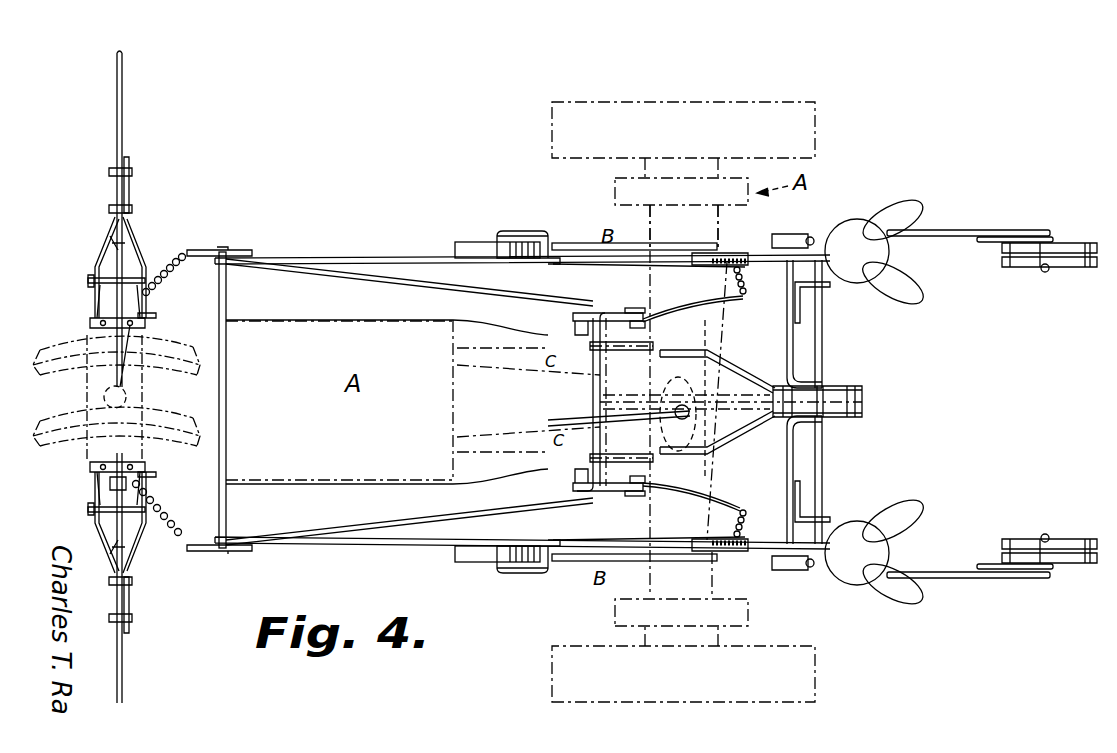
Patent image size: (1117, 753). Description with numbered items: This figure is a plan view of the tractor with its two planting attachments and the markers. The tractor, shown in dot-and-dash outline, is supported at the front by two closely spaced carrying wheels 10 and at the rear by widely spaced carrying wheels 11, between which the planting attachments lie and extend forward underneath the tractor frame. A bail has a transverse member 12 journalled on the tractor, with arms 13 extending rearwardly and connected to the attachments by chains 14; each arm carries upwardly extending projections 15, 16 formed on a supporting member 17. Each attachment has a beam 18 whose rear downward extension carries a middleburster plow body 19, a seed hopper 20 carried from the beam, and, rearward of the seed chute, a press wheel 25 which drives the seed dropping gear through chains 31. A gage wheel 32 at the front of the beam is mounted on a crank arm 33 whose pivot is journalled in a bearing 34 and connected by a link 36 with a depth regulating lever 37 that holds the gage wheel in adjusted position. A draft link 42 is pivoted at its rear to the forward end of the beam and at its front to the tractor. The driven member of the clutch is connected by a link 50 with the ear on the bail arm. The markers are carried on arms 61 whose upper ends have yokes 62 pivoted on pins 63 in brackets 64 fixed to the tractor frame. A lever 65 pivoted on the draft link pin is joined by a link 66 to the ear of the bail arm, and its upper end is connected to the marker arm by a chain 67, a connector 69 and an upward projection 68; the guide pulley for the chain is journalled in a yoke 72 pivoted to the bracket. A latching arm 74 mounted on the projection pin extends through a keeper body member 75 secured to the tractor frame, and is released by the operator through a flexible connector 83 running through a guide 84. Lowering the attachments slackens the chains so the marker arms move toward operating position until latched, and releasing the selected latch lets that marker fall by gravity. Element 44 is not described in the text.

The carrying wheels 10 is at (53, 415).
The carrying wheels 11 is at (816, 152).
The bail member 12 is at (592, 383).
The bail arms 13 is at (712, 306).
The chains 14 is at (746, 288).
The upwardly extending projection 15 is at (632, 308).
The upwardly extending projection 16 is at (630, 326).
The supporting member 17 is at (625, 350).
The beam 18 is at (658, 249).
The middleburster plow body 19 is at (908, 210).
The seed hopper 20 is at (857, 402).
The press wheel 25 is at (1004, 252).
The chains 31 is at (1020, 237).
The gage wheel 32 is at (478, 242).
The crank arm 33 is at (528, 232).
The bearing 34 is at (575, 243).
The link 36 is at (668, 268).
The depth regulating lever 37 is at (725, 252).
The draft link 42 is at (411, 257).
The arm 44 is at (950, 230).
The link 50 is at (590, 312).
The marker arms 61 is at (125, 128).
The yoke 62 is at (135, 244).
The pin 63 is at (100, 275).
The bracket 64 is at (100, 293).
The lever 65 is at (240, 252).
The link 66 is at (412, 282).
The chains 67 is at (130, 222).
The upward projections 68 is at (113, 168).
The connectors 69 is at (131, 200).
The yoke 72 is at (124, 497).
The latching arm 74 is at (118, 240).
The body member 75 is at (97, 320).
The connector 83 is at (296, 320).
The guide 84 is at (148, 314).